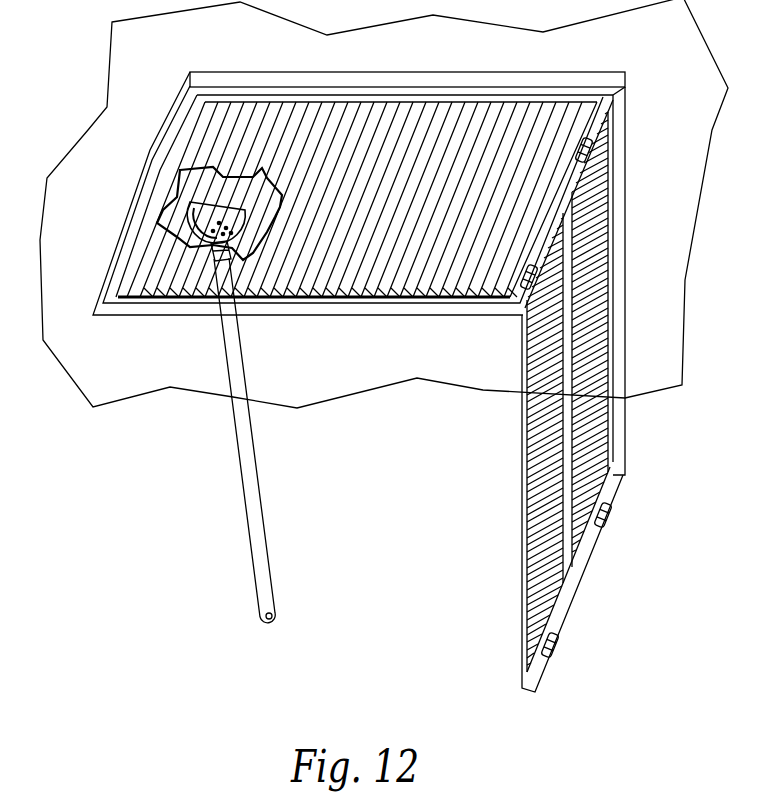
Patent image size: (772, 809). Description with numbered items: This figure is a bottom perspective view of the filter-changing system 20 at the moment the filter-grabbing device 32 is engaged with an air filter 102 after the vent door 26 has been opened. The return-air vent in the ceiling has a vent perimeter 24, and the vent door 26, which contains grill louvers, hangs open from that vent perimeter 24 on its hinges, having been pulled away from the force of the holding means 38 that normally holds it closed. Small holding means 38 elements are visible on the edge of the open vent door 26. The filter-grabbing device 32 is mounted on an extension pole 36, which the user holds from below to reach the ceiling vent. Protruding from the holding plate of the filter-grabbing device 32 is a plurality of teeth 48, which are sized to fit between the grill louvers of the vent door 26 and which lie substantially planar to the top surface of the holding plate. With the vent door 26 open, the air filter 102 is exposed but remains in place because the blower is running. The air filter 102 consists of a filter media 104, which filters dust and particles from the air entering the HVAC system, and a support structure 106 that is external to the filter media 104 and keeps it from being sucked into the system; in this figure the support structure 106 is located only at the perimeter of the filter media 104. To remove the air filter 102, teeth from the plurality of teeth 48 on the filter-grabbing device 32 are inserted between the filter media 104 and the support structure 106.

The filter-changing system 20 is at (162, 372).
The vent perimeter 24 is at (400, 82).
The vent door 26 is at (623, 418).
The filter-grabbing device 32 is at (218, 212).
The extension pole 36 is at (235, 422).
The holding means 38 is at (610, 516).
The plurality of teeth 48 is at (178, 183).
The air filter 102 is at (338, 287).
The filter media 104 is at (376, 283).
The support structure 106 is at (436, 304).